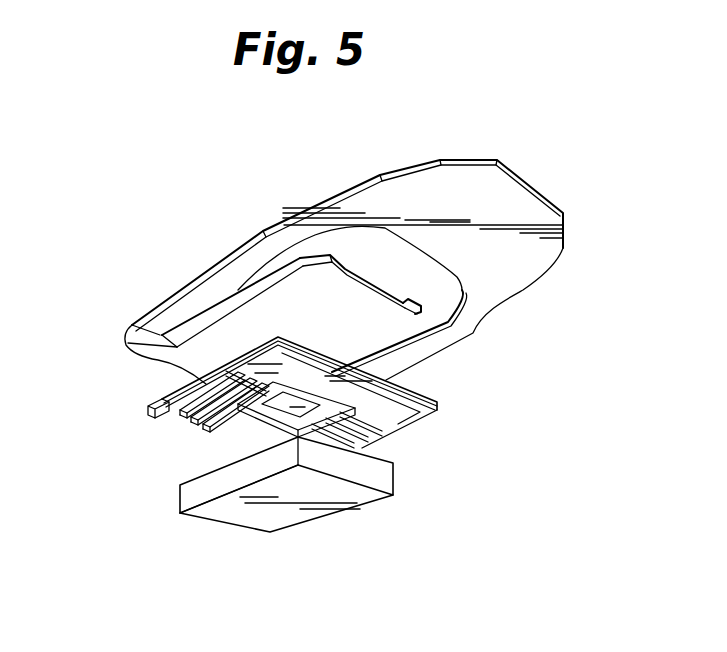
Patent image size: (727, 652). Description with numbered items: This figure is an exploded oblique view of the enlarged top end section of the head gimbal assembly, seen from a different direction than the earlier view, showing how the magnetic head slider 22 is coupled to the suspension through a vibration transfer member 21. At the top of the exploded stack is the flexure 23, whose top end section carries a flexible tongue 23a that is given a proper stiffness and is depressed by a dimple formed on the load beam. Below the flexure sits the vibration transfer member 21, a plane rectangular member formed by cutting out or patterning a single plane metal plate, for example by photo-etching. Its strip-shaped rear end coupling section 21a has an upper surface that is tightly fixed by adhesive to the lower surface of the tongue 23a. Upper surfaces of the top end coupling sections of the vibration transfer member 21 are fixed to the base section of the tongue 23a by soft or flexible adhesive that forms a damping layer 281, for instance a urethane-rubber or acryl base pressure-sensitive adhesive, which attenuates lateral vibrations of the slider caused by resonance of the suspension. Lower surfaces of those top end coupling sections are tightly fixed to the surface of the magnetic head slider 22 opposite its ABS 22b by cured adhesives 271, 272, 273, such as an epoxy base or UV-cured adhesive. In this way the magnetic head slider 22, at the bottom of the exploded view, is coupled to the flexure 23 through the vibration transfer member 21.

The flexure 23 is at (537, 259).
The flexible tongue 23a is at (403, 316).
The vibration transfer member 21 is at (415, 391).
The rear end coupling section 21a is at (375, 408).
The magnetic head slider 22 is at (375, 473).
The ABS 22b is at (297, 515).
The damping layer 281 is at (148, 406).
The adhesive 271 is at (180, 416).
The adhesive 272 is at (198, 425).
The adhesive 273 is at (210, 434).